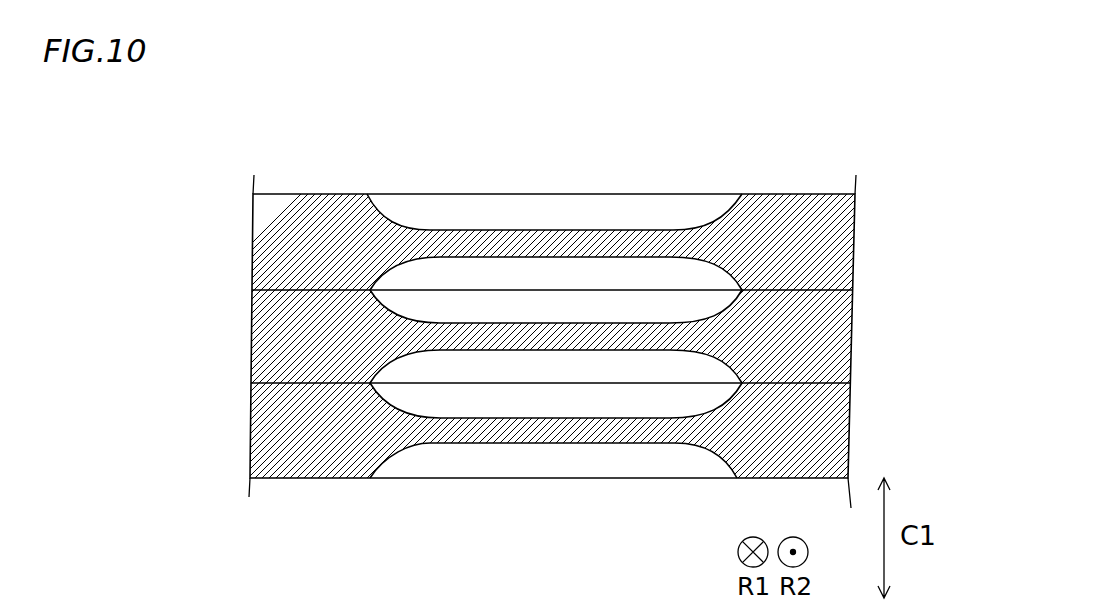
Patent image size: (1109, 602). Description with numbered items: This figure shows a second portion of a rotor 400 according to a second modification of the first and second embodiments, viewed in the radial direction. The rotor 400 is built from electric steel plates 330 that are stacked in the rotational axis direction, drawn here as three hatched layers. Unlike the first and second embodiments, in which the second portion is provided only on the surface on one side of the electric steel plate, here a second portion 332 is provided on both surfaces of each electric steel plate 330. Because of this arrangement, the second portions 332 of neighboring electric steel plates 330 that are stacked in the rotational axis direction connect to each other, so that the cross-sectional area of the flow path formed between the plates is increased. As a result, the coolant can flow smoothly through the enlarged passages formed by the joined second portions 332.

The rotor 400 is at (554, 300).
The electric steel plate 330 is at (855, 240).
The second portion 332 is at (580, 230).